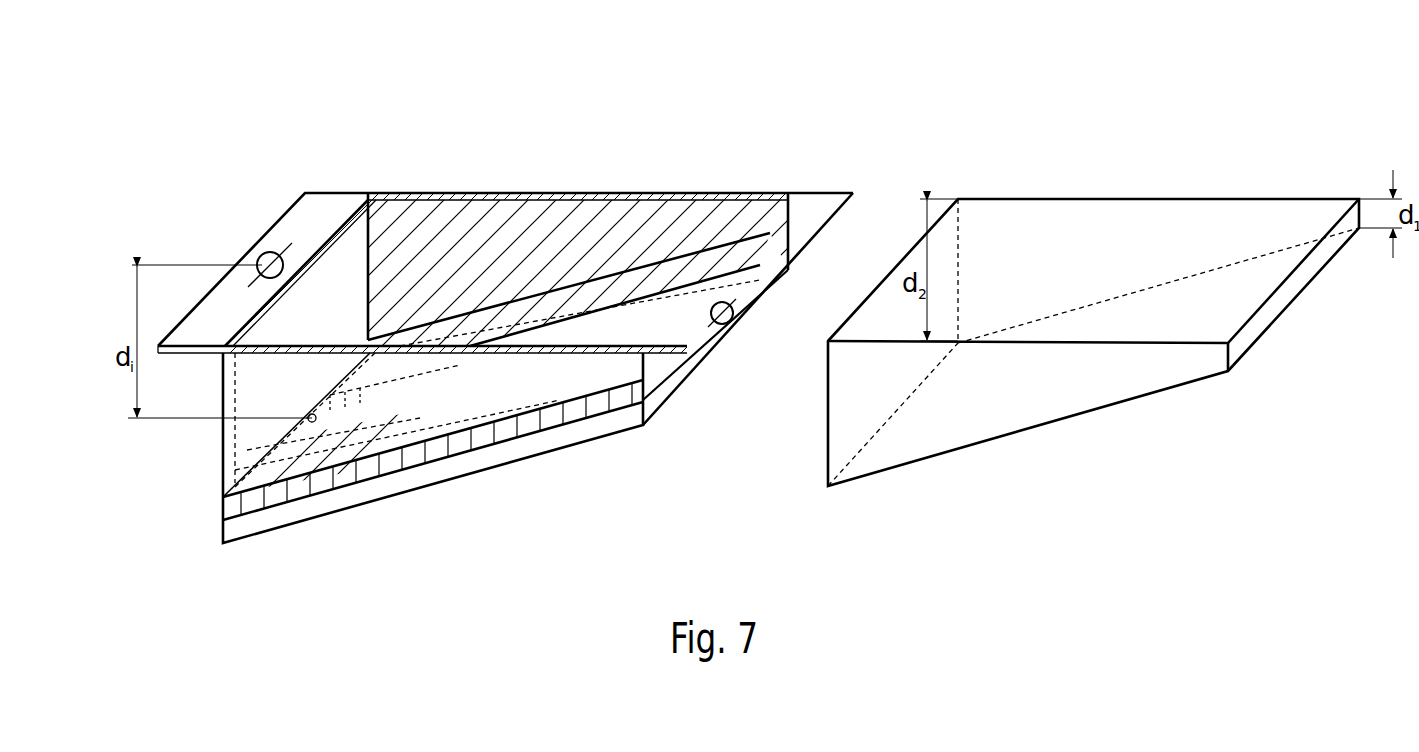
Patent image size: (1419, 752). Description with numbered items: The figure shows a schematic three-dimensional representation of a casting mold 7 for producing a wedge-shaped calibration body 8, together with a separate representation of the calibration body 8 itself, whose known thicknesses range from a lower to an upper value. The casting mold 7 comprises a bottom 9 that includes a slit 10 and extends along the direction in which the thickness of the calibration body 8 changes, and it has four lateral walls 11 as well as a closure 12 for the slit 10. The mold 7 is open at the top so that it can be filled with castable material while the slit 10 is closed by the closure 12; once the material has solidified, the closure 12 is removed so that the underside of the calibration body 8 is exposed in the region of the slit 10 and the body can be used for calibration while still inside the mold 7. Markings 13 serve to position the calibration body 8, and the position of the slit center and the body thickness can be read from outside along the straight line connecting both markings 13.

The casting mold 7 is at (653, 96).
The calibration body 8 is at (1015, 425).
The bottom 9 is at (387, 465).
The slit 10 is at (307, 419).
The lateral walls 11 is at (627, 192).
The closure 12 is at (548, 440).
The markings 13 is at (265, 252).